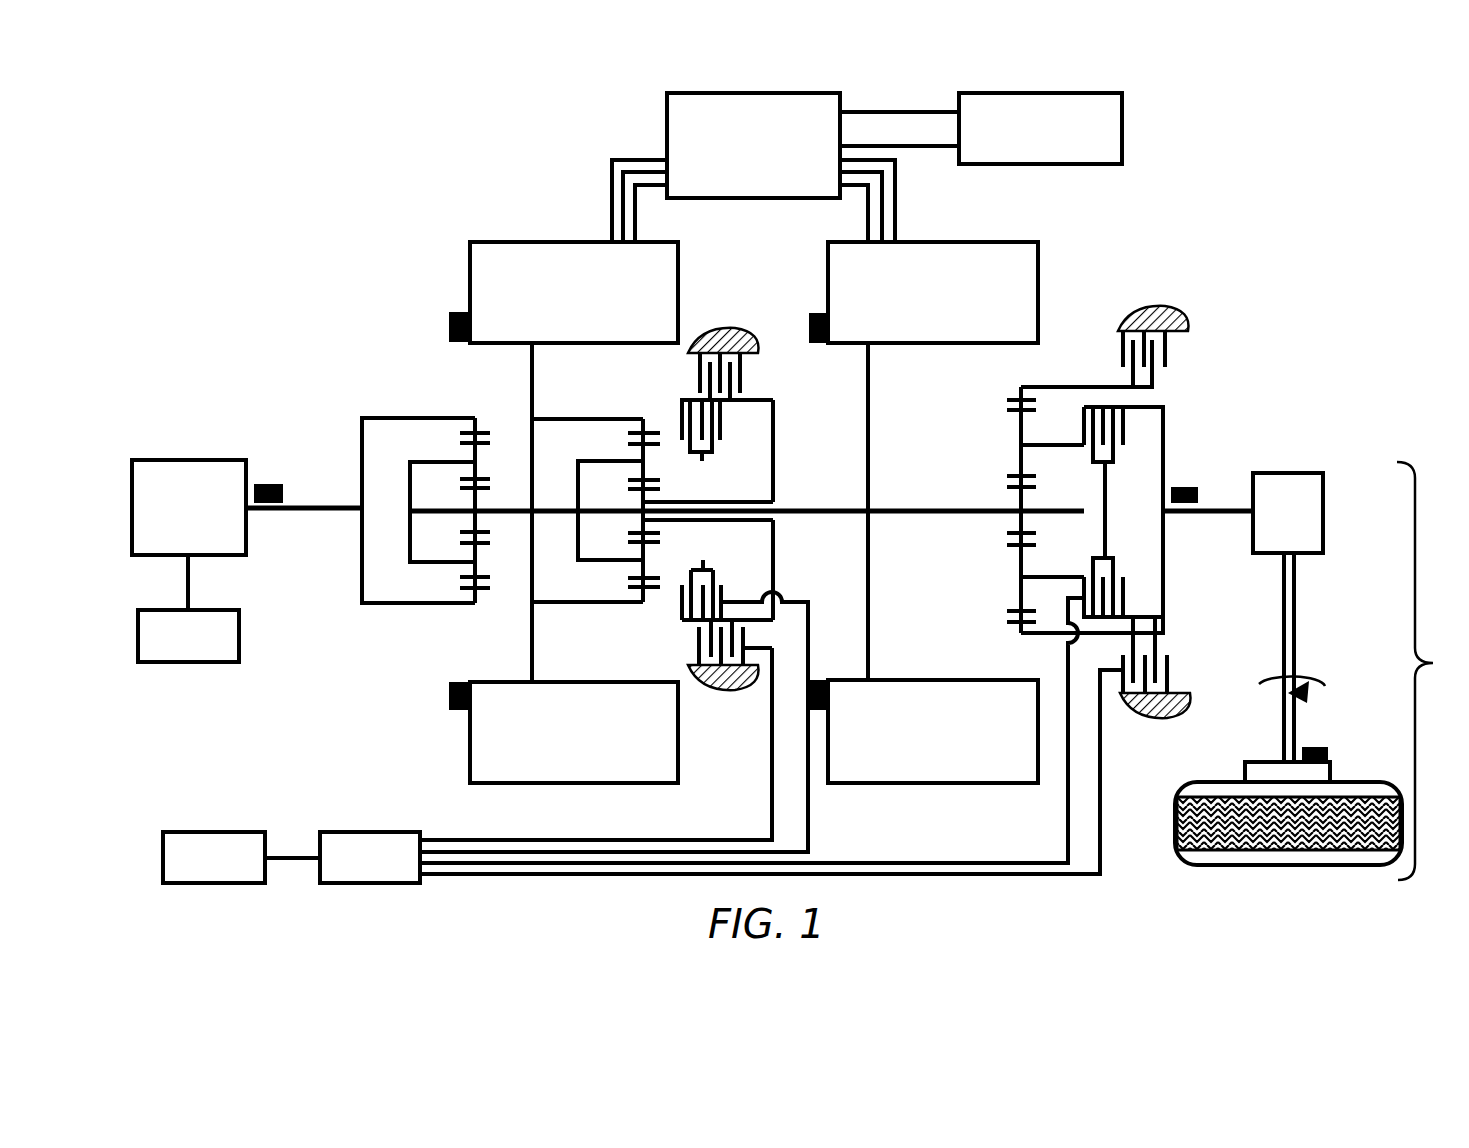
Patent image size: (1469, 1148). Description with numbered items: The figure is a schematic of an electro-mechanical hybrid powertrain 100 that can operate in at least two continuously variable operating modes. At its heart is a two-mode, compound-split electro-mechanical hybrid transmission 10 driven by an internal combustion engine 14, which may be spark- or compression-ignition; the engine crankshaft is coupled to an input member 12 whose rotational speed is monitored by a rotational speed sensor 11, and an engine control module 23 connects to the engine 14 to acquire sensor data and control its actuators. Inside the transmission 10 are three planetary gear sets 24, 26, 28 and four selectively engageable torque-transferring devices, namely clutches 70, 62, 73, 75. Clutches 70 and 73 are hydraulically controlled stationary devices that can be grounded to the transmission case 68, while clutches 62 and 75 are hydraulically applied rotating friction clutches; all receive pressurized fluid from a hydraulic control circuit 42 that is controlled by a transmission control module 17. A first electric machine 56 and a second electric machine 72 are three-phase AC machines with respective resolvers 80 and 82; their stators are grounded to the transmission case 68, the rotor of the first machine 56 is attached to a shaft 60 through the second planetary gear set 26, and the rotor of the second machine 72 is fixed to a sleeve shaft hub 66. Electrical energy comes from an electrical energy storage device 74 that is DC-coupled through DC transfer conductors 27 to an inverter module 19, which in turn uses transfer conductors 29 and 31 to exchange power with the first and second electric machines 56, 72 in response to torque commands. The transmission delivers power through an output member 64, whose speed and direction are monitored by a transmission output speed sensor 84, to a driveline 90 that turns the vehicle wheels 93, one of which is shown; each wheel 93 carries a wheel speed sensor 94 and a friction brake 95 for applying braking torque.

The electro-mechanical hybrid powertrain 100 is at (336, 200).
The electro-mechanical hybrid transmission 10 is at (426, 194).
The inverter module 19 is at (667, 110).
The DC transfer conductors 27 is at (850, 112).
The electrical energy storage device 74 is at (1122, 115).
The transfer conductors 29 is at (612, 196).
The transfer conductors 31 is at (898, 190).
The first electric machine 56 is at (470, 275).
The second electric machine 72 is at (1038, 260).
The resolver 80 is at (449, 326).
The resolver 82 is at (817, 313).
The transmission case 68 is at (722, 332).
The clutch C1 70 is at (1118, 348).
The clutch C3 73 is at (756, 378).
The clutch C4 75 is at (736, 440).
The first planetary gear set 24 is at (461, 400).
The second planetary gear set 26 is at (634, 404).
The third planetary gear set 28 is at (1008, 378).
The clutch C2 62 is at (1135, 444).
The shaft 60 is at (1072, 509).
The internal combustion engine 14 is at (198, 460).
The rotational speed sensor 11 is at (270, 484).
The input member 12 is at (320, 505).
The sleeve shaft hub 66 is at (905, 508).
The transmission output speed sensor 84 is at (1188, 487).
The output member 64 is at (1226, 509).
The driveline 90 is at (1428, 671).
The engine control module 23 is at (239, 660).
The wheel speed sensor 94 is at (1318, 747).
The friction brake 95 is at (1340, 770).
The vehicle wheel 93 is at (1245, 776).
The transmission control module 17 is at (205, 832).
The hydraulic control circuit 42 is at (335, 832).